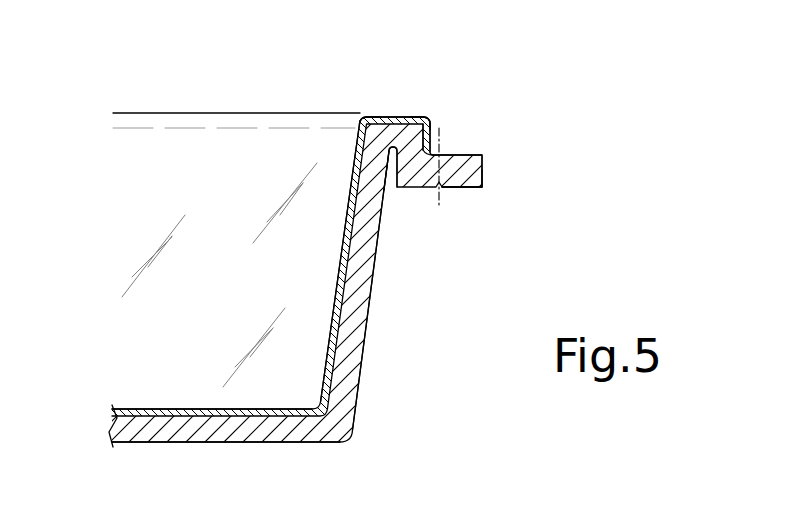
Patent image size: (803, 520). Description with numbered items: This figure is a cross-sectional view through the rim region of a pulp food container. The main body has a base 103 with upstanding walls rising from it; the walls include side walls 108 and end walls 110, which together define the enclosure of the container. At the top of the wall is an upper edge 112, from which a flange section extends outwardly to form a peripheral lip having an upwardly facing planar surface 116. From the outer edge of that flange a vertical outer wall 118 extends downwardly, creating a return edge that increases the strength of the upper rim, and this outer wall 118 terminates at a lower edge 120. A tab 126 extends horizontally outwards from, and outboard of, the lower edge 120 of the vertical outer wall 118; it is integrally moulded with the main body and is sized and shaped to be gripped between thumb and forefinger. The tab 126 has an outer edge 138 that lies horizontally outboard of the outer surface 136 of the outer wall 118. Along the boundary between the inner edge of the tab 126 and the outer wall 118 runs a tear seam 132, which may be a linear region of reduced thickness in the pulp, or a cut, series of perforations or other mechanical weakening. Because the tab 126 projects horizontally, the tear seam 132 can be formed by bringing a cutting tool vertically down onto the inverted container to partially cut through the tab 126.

The base 103 is at (188, 438).
The side wall 108 is at (352, 320).
The end wall 110 is at (243, 140).
The upper edge 112 is at (373, 117).
The upwardly facing planar surface 116 is at (403, 117).
The vertical outer wall 118 is at (418, 123).
The outer surface 136 is at (423, 136).
The outer edge 138 is at (477, 173).
The tab 126 is at (482, 188).
The lower edge 120 is at (397, 188).
The tear seam 132 is at (440, 184).